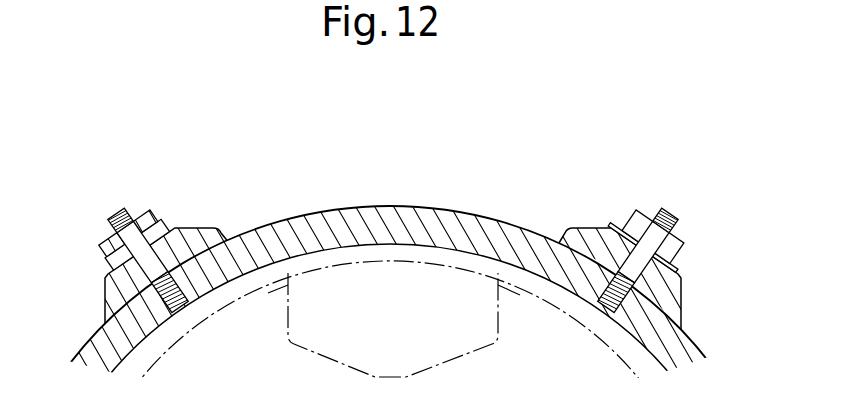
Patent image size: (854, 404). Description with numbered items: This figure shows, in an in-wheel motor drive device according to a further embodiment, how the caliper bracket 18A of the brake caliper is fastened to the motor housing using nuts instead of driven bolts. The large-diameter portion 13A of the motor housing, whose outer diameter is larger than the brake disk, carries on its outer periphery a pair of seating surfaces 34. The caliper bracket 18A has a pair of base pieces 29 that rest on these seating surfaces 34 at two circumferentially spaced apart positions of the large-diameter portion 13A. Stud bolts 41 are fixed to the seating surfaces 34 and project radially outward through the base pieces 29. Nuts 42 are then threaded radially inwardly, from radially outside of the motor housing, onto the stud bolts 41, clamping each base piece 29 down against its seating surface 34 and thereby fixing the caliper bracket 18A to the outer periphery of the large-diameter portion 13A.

The large-diameter portion 13A is at (384, 205).
The caliper bracket 18A is at (393, 199).
The base piece 29 is at (182, 240).
The seating surface 34 is at (140, 297).
The stud bolt 41 is at (113, 213).
The nut 42 is at (100, 247).